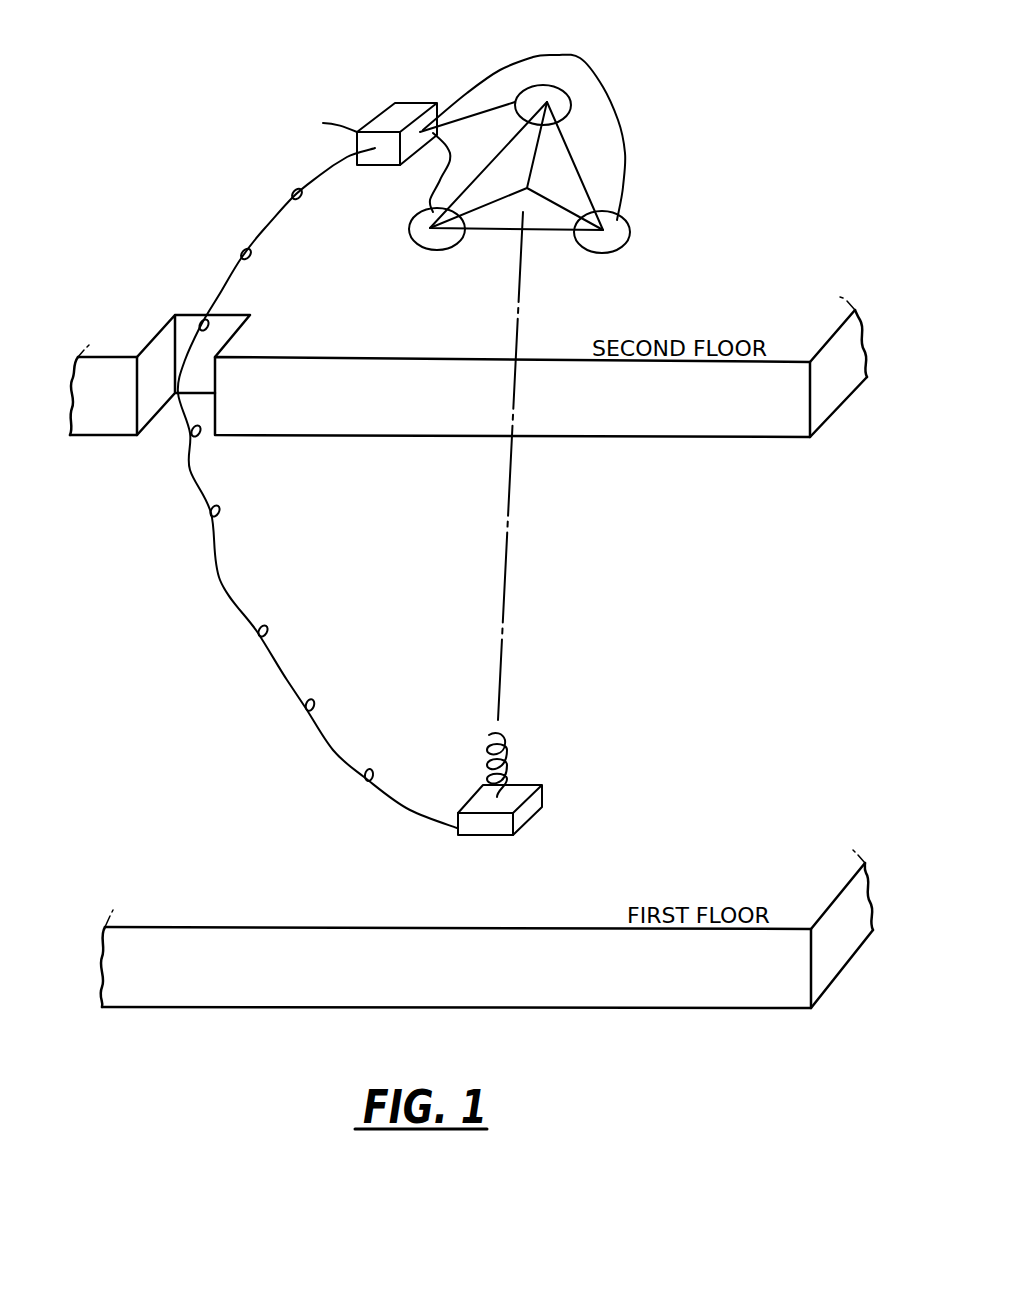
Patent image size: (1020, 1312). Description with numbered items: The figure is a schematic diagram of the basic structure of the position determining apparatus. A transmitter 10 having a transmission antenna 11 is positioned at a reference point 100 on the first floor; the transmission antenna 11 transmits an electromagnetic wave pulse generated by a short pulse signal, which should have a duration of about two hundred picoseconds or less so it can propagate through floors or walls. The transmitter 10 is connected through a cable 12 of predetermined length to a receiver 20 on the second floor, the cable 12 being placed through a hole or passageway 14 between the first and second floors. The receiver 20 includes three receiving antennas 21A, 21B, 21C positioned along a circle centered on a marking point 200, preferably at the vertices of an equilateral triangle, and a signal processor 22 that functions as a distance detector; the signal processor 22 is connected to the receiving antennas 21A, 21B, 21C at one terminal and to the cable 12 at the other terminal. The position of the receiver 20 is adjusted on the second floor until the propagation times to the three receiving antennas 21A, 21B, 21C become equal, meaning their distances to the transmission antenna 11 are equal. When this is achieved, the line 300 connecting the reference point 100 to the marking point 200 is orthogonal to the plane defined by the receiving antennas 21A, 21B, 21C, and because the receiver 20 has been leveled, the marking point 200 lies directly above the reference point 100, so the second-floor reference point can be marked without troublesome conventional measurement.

The transmitter 10 is at (542, 790).
The transmission antenna 11 is at (510, 752).
The cable 12 is at (227, 583).
The hole or passageway 14 is at (225, 327).
The receiver 20 is at (555, 160).
The receiving antenna 21A is at (433, 250).
The receiving antenna 21B is at (613, 253).
The receiving antenna 21C is at (567, 84).
The signal processor 22 is at (412, 103).
The reference point 100 is at (492, 842).
The marking point 200 is at (552, 180).
The line 300 is at (508, 573).